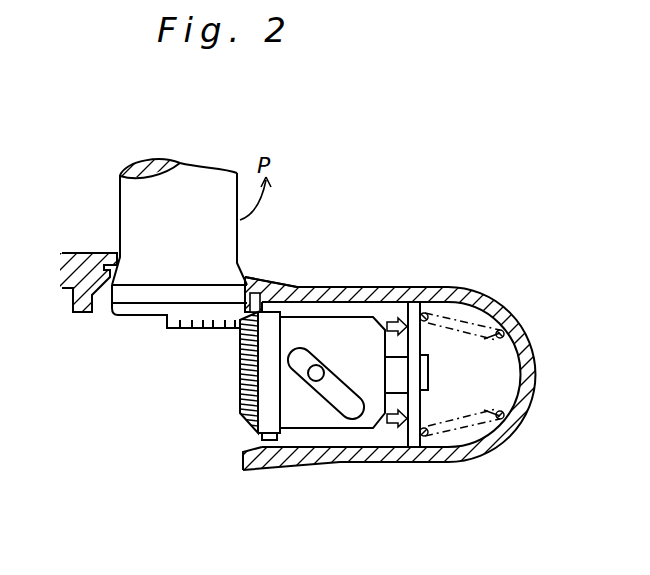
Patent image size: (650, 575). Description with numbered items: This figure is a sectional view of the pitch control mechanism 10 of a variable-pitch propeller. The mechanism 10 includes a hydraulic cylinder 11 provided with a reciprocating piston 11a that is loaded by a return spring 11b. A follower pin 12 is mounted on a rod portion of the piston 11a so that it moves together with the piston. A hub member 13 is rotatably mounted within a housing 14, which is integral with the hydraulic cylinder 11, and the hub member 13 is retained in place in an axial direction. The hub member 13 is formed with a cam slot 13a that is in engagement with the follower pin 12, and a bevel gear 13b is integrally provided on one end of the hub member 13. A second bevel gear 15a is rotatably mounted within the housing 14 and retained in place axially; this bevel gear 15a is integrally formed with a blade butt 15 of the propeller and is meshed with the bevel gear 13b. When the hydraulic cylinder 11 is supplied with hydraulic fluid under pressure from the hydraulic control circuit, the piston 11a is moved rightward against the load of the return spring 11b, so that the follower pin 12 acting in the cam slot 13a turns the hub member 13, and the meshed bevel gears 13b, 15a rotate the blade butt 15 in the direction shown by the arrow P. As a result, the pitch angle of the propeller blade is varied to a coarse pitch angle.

The pitch control mechanism 10 is at (273, 227).
The hydraulic cylinder 11 is at (425, 293).
The reciprocating piston 11a is at (415, 410).
The return spring 11b is at (492, 425).
The follower pin 12 is at (313, 384).
The hub member 13 is at (337, 330).
The cam slot 13a is at (343, 407).
The bevel gear 13b is at (240, 397).
The housing 14 is at (280, 285).
The blade butt 15 is at (137, 213).
The bevel gear 15a is at (173, 330).